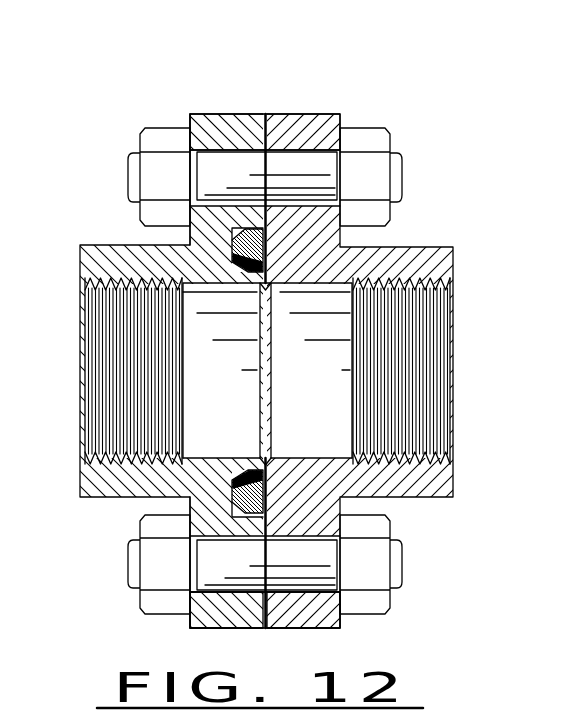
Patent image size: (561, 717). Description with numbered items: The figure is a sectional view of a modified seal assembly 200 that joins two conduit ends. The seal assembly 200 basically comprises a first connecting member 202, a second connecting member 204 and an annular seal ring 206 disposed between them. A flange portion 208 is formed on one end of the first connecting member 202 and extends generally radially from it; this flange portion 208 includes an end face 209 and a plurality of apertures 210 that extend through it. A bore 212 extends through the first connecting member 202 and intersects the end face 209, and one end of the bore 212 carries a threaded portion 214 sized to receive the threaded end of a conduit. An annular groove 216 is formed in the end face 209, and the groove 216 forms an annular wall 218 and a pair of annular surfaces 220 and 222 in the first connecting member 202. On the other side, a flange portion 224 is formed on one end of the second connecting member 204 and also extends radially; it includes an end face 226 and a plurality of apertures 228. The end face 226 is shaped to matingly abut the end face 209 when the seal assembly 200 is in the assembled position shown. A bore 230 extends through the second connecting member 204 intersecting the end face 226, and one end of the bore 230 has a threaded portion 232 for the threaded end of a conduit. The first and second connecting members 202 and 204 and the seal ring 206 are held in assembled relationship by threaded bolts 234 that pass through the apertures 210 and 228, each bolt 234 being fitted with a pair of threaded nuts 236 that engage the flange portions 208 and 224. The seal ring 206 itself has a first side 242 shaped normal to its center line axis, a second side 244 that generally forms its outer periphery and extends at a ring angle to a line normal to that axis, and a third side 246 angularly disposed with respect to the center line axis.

The seal assembly 200 is at (305, 88).
The first connecting member 202 is at (97, 247).
The second connecting member 204 is at (410, 253).
The annular seal ring 206 is at (278, 255).
The flange portion 208 is at (207, 590).
The end face 209 is at (275, 612).
The apertures 210 is at (206, 113).
The bore 212 is at (230, 457).
The threaded portion 214 is at (87, 448).
The annular groove 216 is at (230, 255).
The annular wall 218 is at (230, 247).
The annular surface 220 is at (250, 230).
The annular surface 222 is at (243, 272).
The flange portion 224 is at (320, 618).
The end face 226 is at (258, 116).
The apertures 228 is at (280, 355).
The bore 230 is at (333, 457).
The threaded portion 232 is at (452, 458).
The threaded bolts 234 is at (247, 167).
The threaded nuts 236 is at (158, 130).
The first side 242 is at (272, 492).
The second side 244 is at (245, 512).
The third side 246 is at (243, 475).